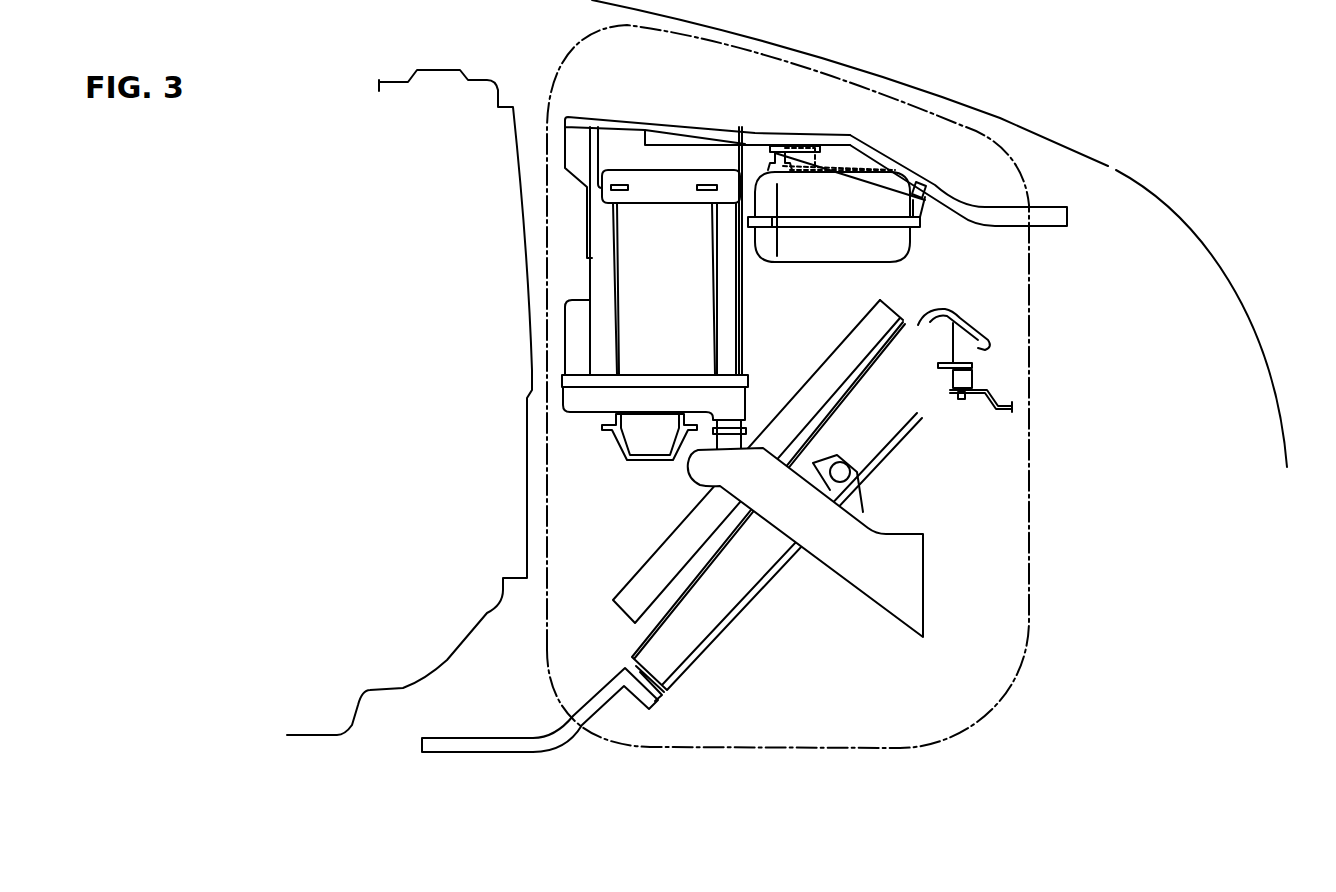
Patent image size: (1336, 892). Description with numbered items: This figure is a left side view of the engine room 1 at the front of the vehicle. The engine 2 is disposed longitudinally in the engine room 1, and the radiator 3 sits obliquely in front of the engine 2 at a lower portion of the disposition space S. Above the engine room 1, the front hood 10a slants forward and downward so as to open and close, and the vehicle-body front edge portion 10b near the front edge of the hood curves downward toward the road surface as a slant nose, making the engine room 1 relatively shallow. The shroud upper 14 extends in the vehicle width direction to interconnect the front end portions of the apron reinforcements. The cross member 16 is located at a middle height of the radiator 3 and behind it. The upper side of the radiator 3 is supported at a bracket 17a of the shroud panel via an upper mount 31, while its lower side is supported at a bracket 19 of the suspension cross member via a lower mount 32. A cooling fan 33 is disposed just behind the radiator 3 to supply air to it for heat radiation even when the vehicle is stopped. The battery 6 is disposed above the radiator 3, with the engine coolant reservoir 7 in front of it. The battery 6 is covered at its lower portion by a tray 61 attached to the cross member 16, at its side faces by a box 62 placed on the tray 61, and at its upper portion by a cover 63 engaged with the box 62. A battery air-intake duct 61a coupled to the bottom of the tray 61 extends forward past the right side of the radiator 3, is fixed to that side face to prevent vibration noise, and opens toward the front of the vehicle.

The engine room 1 is at (384, 31).
The engine 2 is at (482, 81).
The radiator 3 is at (731, 633).
The battery 6 is at (746, 278).
The engine coolant reservoir 7 is at (915, 243).
The front hood 10a is at (1030, 116).
The vehicle-body front edge portion 10b is at (1246, 303).
The shroud upper 14 is at (1042, 206).
The cross member 16 is at (617, 452).
The bracket 17a is at (1005, 411).
The bracket 19 is at (483, 736).
The upper mount 31 is at (976, 379).
The lower mount 32 is at (647, 703).
The cooling fan 33 is at (647, 560).
The tray 61 is at (646, 428).
The battery air-intake duct 61a is at (867, 596).
The box 62 is at (748, 345).
The cover 63 is at (576, 115).
The disposition space S is at (1032, 311).